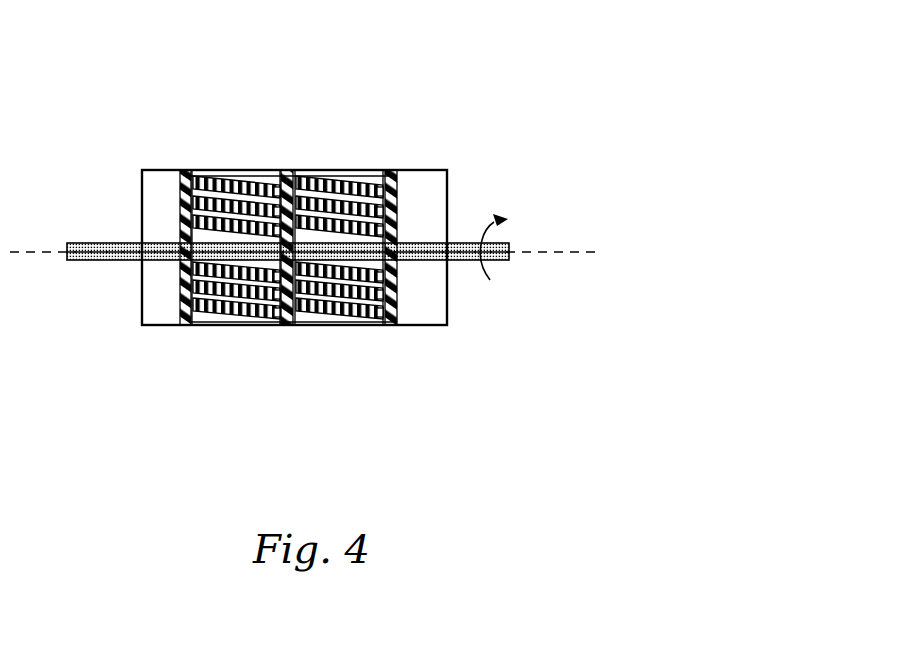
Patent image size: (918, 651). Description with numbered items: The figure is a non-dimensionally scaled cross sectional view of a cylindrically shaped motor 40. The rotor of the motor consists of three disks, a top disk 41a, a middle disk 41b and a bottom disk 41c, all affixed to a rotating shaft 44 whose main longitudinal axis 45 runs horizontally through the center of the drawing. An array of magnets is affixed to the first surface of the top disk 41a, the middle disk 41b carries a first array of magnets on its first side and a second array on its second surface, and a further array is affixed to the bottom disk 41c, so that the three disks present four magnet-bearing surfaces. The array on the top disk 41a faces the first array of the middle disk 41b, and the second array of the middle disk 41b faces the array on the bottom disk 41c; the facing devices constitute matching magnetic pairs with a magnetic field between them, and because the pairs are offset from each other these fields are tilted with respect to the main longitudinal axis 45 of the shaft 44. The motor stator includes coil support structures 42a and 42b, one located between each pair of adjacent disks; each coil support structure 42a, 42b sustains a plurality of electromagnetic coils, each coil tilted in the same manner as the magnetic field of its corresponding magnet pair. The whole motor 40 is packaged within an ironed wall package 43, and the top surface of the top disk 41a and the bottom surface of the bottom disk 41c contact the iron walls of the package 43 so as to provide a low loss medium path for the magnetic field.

The cylindrically shaped motor 40 is at (474, 90).
The top disk 41a is at (182, 170).
The disk 41b is at (284, 170).
The bottom disk 41c is at (388, 170).
The coil support structure 42a is at (238, 325).
The coil support structure 42b is at (324, 325).
The ironed wall package 43 is at (142, 325).
The rotating shaft 44 is at (78, 264).
The main longitudinal axis 45 is at (560, 248).